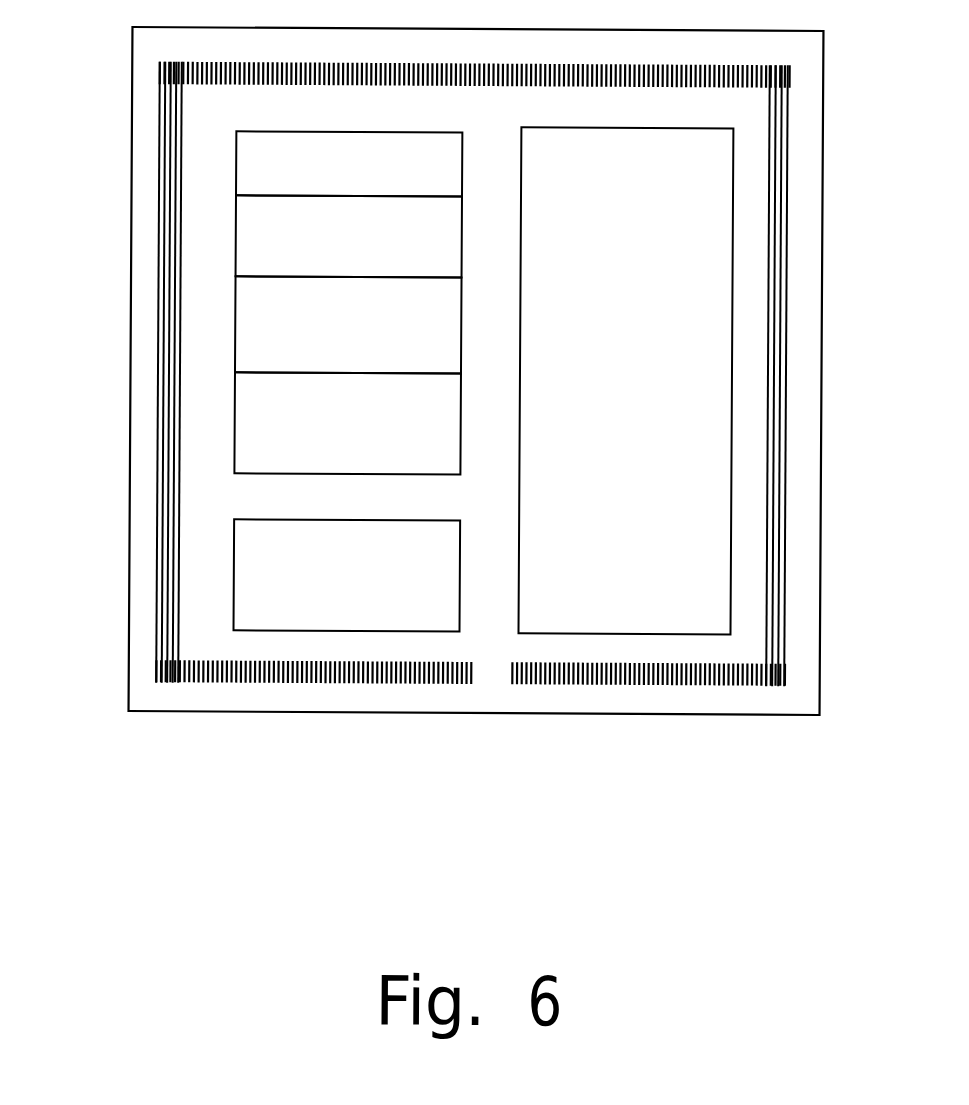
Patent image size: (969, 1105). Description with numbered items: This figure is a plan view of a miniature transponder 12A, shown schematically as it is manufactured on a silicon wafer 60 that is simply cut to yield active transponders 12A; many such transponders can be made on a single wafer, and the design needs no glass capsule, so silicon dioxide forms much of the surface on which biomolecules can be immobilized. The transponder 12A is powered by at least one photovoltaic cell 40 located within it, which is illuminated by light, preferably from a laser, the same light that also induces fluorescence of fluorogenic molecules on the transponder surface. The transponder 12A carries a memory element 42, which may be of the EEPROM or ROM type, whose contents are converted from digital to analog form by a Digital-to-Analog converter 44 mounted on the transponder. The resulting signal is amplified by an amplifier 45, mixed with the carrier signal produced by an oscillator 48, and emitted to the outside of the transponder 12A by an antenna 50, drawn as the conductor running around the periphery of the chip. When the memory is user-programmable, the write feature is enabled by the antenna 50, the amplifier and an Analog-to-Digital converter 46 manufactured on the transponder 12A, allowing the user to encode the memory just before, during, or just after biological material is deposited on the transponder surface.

The transponder 12A is at (311, 743).
The silicon wafer 60 is at (196, 494).
The antenna 50 is at (642, 695).
The amplifier 45 is at (349, 163).
The oscillator 48 is at (349, 236).
The Digital-to-Analog converter 44 is at (348, 324).
The Analog-to-Digital converter 46 is at (347, 423).
The memory element 42 is at (347, 575).
The photovoltaic cell 40 is at (625, 380).